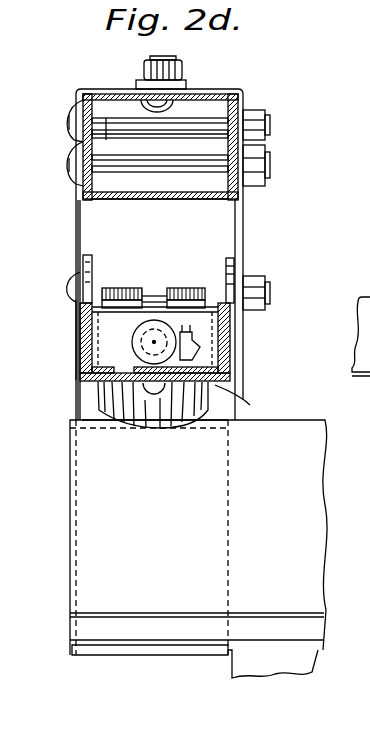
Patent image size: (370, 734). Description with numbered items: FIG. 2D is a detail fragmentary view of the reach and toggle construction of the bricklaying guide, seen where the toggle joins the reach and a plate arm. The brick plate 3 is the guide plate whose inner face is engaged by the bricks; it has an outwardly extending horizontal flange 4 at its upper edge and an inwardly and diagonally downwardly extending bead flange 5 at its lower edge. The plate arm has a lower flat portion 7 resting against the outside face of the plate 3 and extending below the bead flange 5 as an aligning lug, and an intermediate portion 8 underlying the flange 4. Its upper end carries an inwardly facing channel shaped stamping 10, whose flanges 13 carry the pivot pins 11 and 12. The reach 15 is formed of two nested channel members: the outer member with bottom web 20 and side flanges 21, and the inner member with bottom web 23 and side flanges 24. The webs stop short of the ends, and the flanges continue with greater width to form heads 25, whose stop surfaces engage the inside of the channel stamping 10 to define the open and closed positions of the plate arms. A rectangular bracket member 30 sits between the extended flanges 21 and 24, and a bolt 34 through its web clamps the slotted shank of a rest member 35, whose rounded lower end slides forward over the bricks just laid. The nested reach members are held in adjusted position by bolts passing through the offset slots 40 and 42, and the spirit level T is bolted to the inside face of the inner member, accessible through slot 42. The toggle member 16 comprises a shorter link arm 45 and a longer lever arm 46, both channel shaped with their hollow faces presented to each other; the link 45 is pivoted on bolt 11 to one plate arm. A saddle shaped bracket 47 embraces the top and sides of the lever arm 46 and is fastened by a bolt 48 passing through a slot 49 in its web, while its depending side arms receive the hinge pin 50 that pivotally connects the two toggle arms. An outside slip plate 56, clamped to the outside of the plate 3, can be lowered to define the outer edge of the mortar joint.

The brick plate 3 is at (295, 468).
The horizontal flange 4 is at (90, 408).
The bead flange 5 is at (112, 641).
The lower flat portion 7 is at (78, 520).
The intermediate portion 8 is at (78, 440).
The channel shaped stamping 10 is at (76, 215).
The pivot pin 11 is at (106, 120).
The pivot pin 12 is at (68, 283).
The flange 13 is at (361, 311).
The reach 15 is at (66, 313).
The toggle member 16 is at (255, 97).
The bottom web 20 is at (112, 422).
The side flange 21 is at (80, 330).
The bottom web 23 is at (215, 396).
The side flange 24 is at (80, 357).
The head 25 is at (233, 258).
The rectangular bracket member 30 is at (168, 300).
The bolt 34 is at (135, 300).
The rest member 35 is at (196, 292).
The slot 40 is at (140, 342).
The slot 42 is at (195, 428).
The shorter arm 45 is at (146, 200).
The lever arm 46 is at (225, 95).
The saddle shaped bracket 47 is at (80, 126).
The bolt 48 is at (178, 65).
The slot 49 is at (138, 95).
The hinge pin 50 is at (270, 168).
The slip plate 56 is at (262, 672).
The spirit level T is at (222, 372).